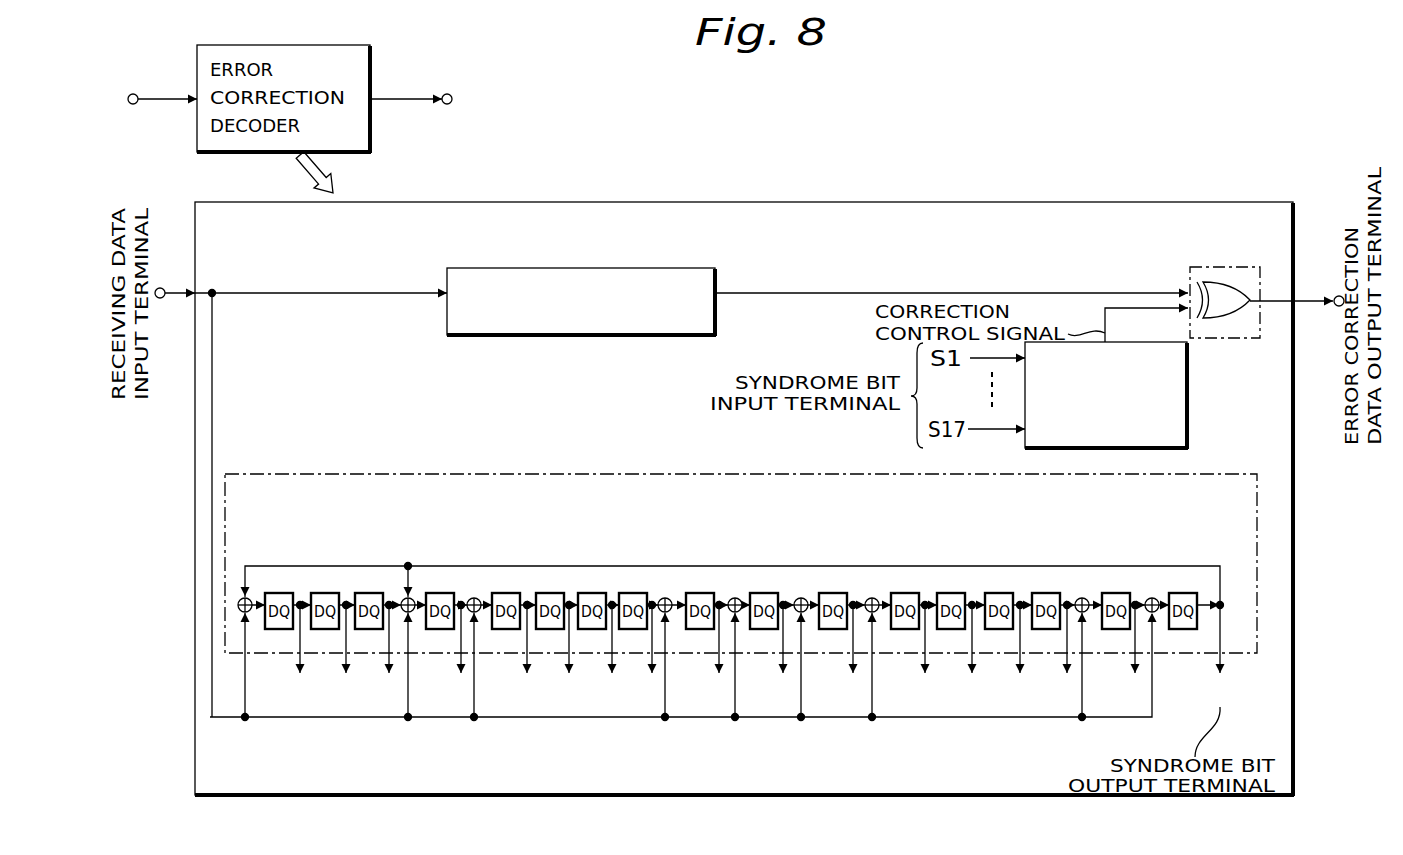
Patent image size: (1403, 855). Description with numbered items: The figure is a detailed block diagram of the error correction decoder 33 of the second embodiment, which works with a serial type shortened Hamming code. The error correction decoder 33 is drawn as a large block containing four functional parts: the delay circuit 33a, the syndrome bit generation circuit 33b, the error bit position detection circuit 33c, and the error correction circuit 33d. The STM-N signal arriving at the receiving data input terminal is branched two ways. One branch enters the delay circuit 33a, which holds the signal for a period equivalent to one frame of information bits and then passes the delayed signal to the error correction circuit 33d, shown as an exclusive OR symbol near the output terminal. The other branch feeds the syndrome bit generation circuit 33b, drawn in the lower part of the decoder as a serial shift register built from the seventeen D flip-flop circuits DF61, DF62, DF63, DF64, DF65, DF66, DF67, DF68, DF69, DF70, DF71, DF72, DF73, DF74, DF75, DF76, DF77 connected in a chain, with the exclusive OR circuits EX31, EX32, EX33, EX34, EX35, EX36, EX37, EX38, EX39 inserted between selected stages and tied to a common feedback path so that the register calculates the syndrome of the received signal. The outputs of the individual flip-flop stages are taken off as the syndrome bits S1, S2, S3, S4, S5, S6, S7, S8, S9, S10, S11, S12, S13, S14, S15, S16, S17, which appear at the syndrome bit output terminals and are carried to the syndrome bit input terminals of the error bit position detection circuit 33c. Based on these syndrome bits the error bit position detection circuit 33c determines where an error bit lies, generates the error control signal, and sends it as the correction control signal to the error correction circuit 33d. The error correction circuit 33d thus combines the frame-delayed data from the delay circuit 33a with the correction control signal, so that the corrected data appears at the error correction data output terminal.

The error correction decoder 33 is at (821, 168).
The delay circuit 33a is at (672, 268).
The syndrome bit generation circuit 33b is at (262, 474).
The error bit position detection circuit 33c is at (1188, 398).
The error correction circuit 33d is at (1209, 265).
The D flip-flop circuit DF61 is at (280, 593).
The D flip-flop circuit DF62 is at (326, 593).
The D flip-flop circuit DF63 is at (369, 593).
The D flip-flop circuit DF64 is at (440, 593).
The D flip-flop circuit DF65 is at (506, 593).
The D flip-flop circuit DF66 is at (550, 593).
The D flip-flop circuit DF67 is at (592, 593).
The D flip-flop circuit DF68 is at (633, 593).
The D flip-flop circuit DF69 is at (700, 593).
The D flip-flop circuit DF70 is at (764, 593).
The D flip-flop circuit DF71 is at (833, 593).
The D flip-flop circuit DF72 is at (905, 593).
The D flip-flop circuit DF73 is at (951, 593).
The D flip-flop circuit DF74 is at (999, 593).
The D flip-flop circuit DF75 is at (1046, 593).
The D flip-flop circuit DF76 is at (1116, 593).
The D flip-flop circuit DF77 is at (1183, 593).
The exclusive OR circuit EX31 is at (252, 611).
The exclusive OR circuit EX32 is at (418, 612).
The exclusive OR circuit EX33 is at (484, 612).
The exclusive OR circuit EX34 is at (675, 612).
The exclusive OR circuit EX35 is at (745, 612).
The exclusive OR circuit EX36 is at (801, 597).
The exclusive OR circuit EX37 is at (882, 612).
The exclusive OR circuit EX38 is at (1092, 612).
The exclusive OR circuit EX39 is at (1152, 597).
The syndrome bit S1 is at (300, 655).
The syndrome bit S2 is at (346, 655).
The syndrome bit S3 is at (389, 655).
The syndrome bit S4 is at (461, 655).
The syndrome bit S5 is at (527, 655).
The syndrome bit S6 is at (569, 655).
The syndrome bit S7 is at (612, 655).
The syndrome bit S8 is at (652, 655).
The syndrome bit S9 is at (719, 655).
The syndrome bit S10 is at (783, 655).
The syndrome bit S11 is at (853, 655).
The syndrome bit S12 is at (925, 655).
The syndrome bit S13 is at (972, 655).
The syndrome bit S14 is at (1020, 655).
The syndrome bit S15 is at (1067, 655).
The syndrome bit S16 is at (1135, 655).
The syndrome bit S17 is at (1220, 656).